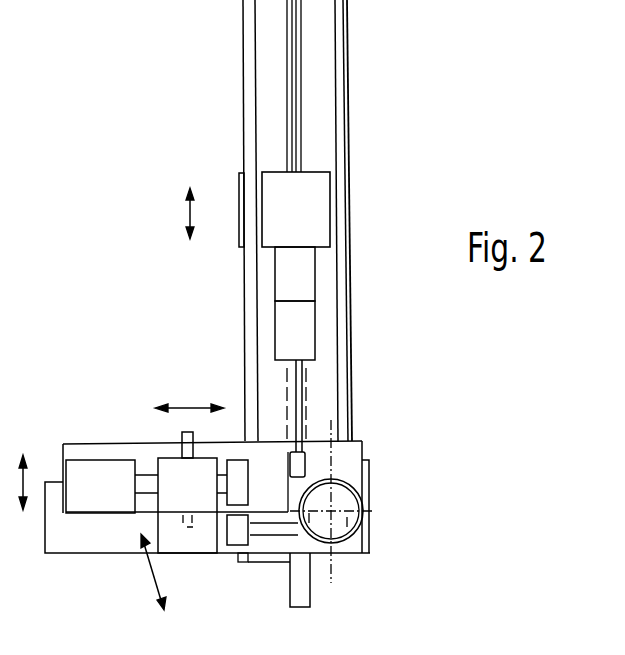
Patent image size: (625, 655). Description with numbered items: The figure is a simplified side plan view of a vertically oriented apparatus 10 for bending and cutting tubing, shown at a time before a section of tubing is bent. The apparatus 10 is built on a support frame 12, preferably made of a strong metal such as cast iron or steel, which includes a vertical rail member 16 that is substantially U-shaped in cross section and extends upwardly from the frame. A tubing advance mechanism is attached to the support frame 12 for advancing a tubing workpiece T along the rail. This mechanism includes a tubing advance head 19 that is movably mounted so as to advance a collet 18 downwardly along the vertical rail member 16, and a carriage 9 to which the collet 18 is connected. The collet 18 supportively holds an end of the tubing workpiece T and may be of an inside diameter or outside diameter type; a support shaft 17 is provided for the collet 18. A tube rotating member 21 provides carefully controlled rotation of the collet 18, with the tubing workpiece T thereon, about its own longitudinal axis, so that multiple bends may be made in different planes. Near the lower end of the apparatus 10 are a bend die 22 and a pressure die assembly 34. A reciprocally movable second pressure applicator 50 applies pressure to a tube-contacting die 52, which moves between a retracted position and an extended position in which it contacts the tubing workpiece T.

The apparatus 10 is at (129, 262).
The support frame 12 is at (348, 67).
The vertical rail member 16 is at (243, 68).
The tubing advance head 19 is at (257, 196).
The tube rotating member 21 is at (298, 272).
The carriage 9 is at (290, 323).
The support shaft 17 is at (296, 400).
The collet 18 is at (308, 470).
The bend die 22 is at (350, 547).
The pressure die assembly 34 is at (130, 452).
The second pressure applicator 50 is at (183, 545).
The tube-contacting die 52 is at (235, 533).
The tubing workpiece T is at (296, 598).